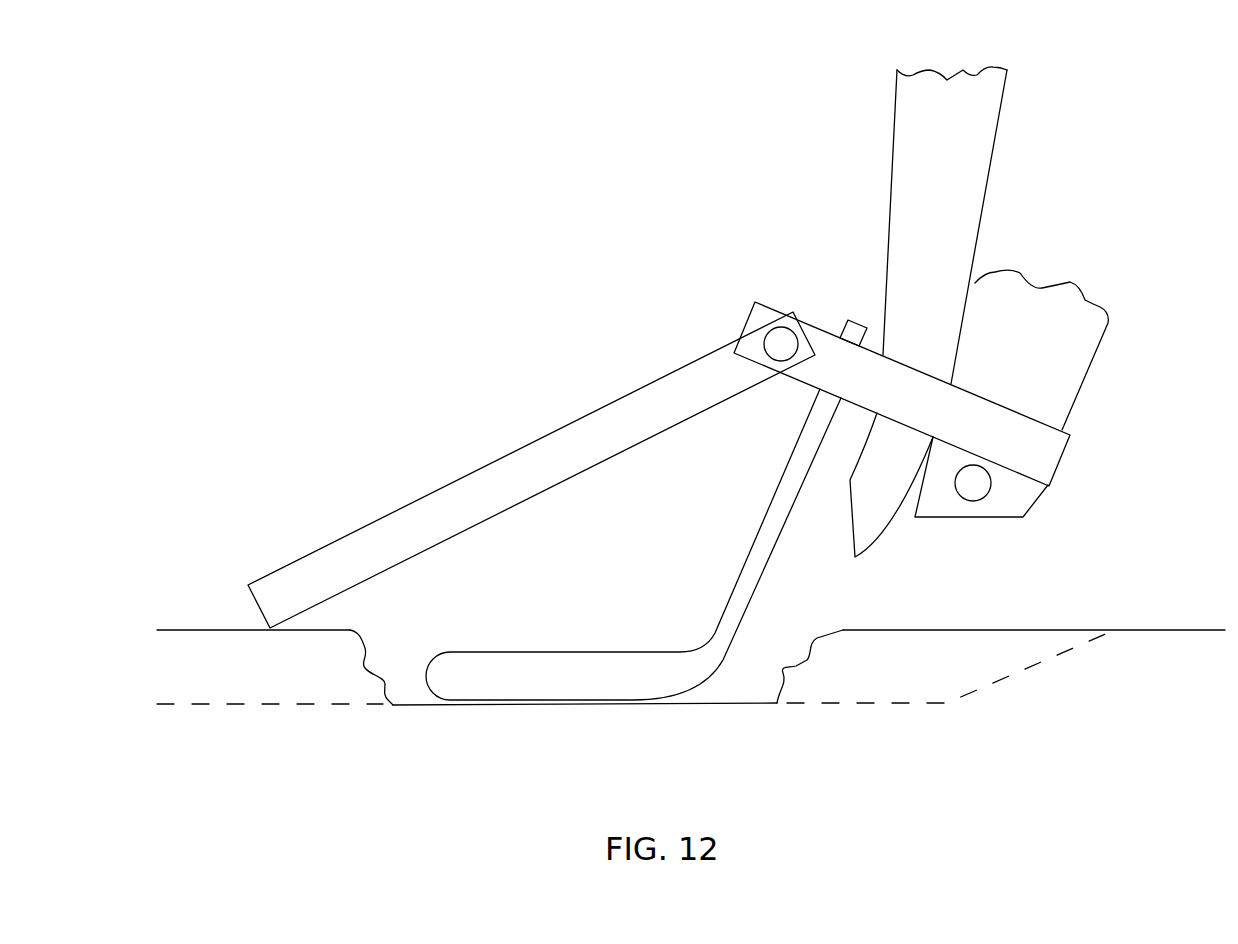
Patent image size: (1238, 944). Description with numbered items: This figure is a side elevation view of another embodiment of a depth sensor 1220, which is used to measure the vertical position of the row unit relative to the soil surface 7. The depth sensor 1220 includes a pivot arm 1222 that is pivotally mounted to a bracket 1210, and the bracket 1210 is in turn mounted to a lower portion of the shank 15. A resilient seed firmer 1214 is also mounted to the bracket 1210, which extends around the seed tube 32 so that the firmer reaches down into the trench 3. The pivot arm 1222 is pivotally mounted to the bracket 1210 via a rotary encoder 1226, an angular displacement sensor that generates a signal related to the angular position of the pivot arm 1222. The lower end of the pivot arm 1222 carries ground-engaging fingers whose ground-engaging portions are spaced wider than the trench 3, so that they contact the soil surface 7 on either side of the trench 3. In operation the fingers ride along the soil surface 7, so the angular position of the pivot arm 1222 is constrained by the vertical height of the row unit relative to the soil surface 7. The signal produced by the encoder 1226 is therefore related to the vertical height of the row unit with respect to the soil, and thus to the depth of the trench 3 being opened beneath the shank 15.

The depth sensor 1220 is at (435, 233).
The pivot arm 1222 is at (443, 487).
The rotary encoder 1226 is at (752, 330).
The bracket 1210 is at (1062, 462).
The resilient seed firmer 1214 is at (548, 680).
The seed tube 32 is at (950, 190).
The shank 15 is at (1030, 368).
The soil surface 7 is at (1133, 628).
The trench 3 is at (230, 663).